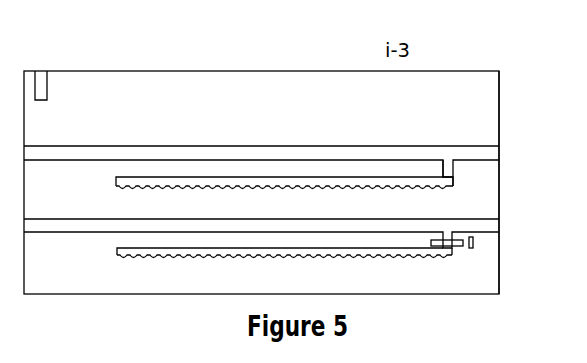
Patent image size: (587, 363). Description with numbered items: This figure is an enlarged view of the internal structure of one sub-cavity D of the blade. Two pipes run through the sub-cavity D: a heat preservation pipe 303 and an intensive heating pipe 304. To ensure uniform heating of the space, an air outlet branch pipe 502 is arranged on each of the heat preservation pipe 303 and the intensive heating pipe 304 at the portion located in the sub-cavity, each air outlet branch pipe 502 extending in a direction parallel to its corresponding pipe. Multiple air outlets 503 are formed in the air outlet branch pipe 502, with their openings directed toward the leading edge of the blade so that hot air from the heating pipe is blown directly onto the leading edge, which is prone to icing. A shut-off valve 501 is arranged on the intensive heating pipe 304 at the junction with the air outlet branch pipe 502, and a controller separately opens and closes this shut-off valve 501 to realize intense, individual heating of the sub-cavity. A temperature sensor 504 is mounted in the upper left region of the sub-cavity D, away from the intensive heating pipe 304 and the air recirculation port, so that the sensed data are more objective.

The shut-off valve 501 is at (462, 242).
The air outlet branch pipe 502 is at (218, 248).
The air outlets 503 is at (390, 146).
The temperature sensor 504 is at (47, 88).
The heat preservation pipe 303 is at (45, 145).
The intensive heating pipe 304 is at (40, 218).
The sub-cavity D is at (499, 102).